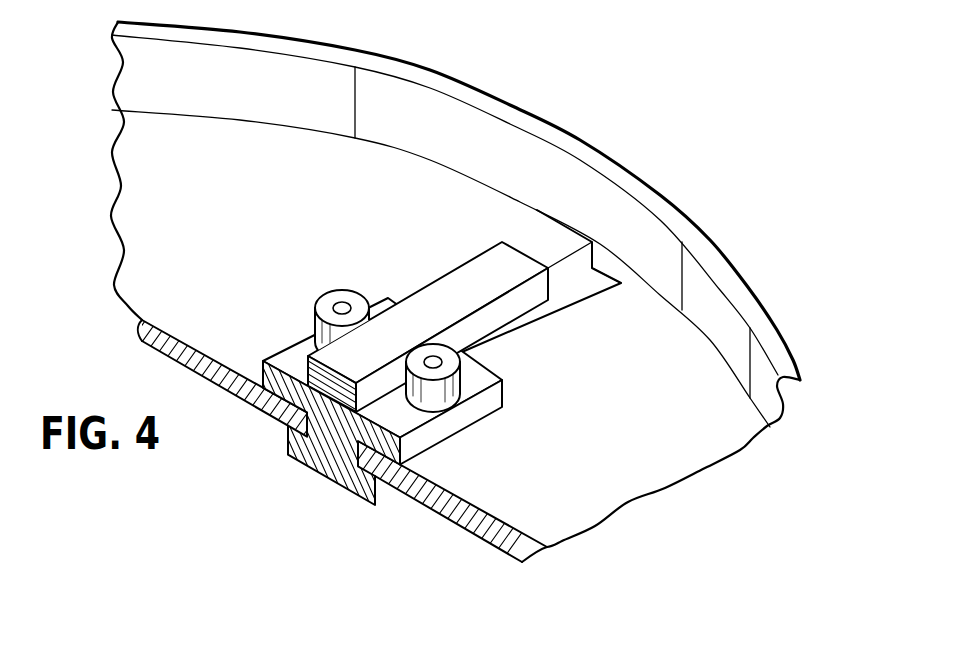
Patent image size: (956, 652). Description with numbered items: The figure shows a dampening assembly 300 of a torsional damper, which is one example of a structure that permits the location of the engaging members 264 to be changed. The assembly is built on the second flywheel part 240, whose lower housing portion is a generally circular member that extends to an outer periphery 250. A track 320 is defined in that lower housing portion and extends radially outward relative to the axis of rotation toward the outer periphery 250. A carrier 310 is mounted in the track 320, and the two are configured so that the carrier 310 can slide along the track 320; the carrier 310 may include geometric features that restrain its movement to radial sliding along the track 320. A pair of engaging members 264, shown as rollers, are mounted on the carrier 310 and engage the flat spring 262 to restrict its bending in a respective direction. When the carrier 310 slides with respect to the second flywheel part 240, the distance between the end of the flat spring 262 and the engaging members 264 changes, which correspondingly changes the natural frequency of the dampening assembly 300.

The second flywheel part 240 is at (577, 91).
The outer periphery 250 is at (623, 170).
The flat spring 262 is at (449, 274).
The engaging members 264 is at (342, 304).
The dampening assembly 300 is at (283, 331).
The carrier 310 is at (320, 472).
The track 320 is at (563, 316).